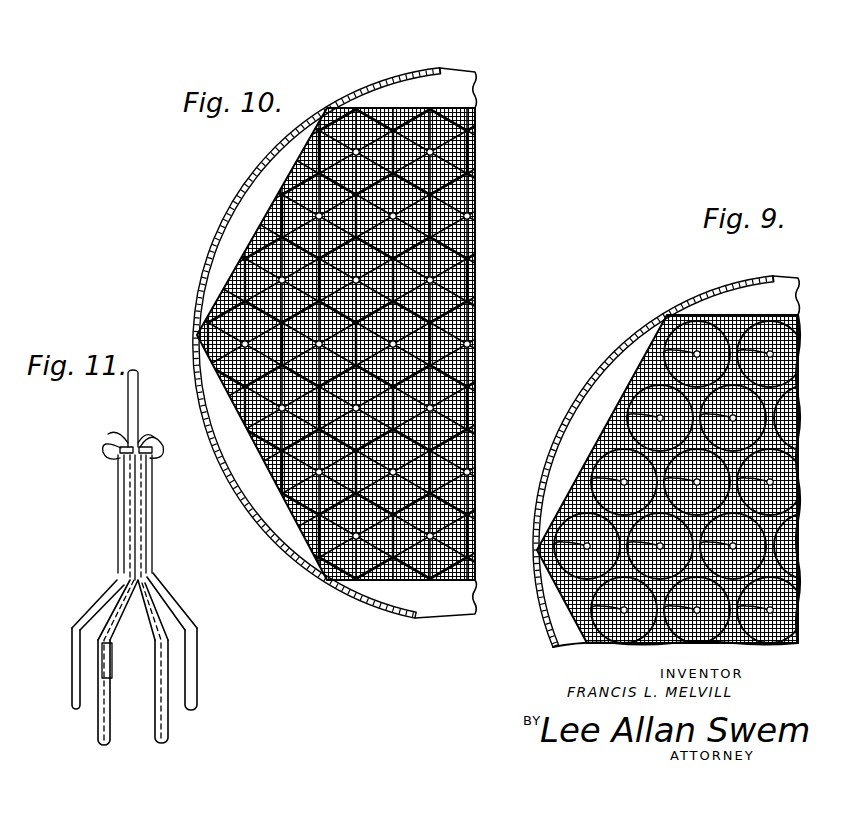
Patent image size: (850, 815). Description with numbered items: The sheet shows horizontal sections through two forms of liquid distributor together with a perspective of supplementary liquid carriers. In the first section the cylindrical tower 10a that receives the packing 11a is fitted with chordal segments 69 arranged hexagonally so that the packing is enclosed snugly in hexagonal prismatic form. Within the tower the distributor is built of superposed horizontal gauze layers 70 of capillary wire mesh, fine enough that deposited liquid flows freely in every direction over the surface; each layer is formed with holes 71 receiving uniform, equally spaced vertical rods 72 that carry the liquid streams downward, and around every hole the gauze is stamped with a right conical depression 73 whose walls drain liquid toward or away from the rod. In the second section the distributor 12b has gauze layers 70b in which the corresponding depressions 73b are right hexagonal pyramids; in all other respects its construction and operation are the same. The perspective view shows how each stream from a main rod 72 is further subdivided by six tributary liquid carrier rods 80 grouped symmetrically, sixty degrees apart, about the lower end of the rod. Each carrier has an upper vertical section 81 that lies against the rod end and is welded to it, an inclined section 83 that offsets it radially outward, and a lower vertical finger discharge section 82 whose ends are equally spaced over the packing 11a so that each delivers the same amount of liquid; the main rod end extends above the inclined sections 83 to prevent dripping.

In FIG. 10, the tower 10a is at (400, 73).
In FIG. 9, the tower 10a is at (681, 299).
In FIG. 10, the packing 11a is at (656, 12).
In FIG. 10, the chordal segments 69 is at (480, 97).
In FIG. 9, the chordal segments 69 is at (793, 280).
In FIG. 9, the gauze layers 70 is at (600, 438).
In FIG. 10, the gauze layers 70b is at (478, 124).
In FIG. 10, the distributor 12b is at (480, 186).
In FIG. 10, the depressions 73b is at (480, 290).
In FIG. 10, the rods 72 is at (470, 346).
In FIG. 9, the rods 72 is at (652, 345).
In FIG. 11, the rods 72 is at (136, 372).
In FIG. 9, the holes 71 is at (555, 518).
In FIG. 9, the depressions 73 is at (565, 549).
In FIG. 11, the upper vertical sections 81 is at (125, 440).
In FIG. 11, the lower vertical finger discharge sections 82 is at (100, 673).
In FIG. 11, the inclined sections 83 is at (118, 602).
In FIG. 11, the liquid carrier rods 80 is at (196, 630).